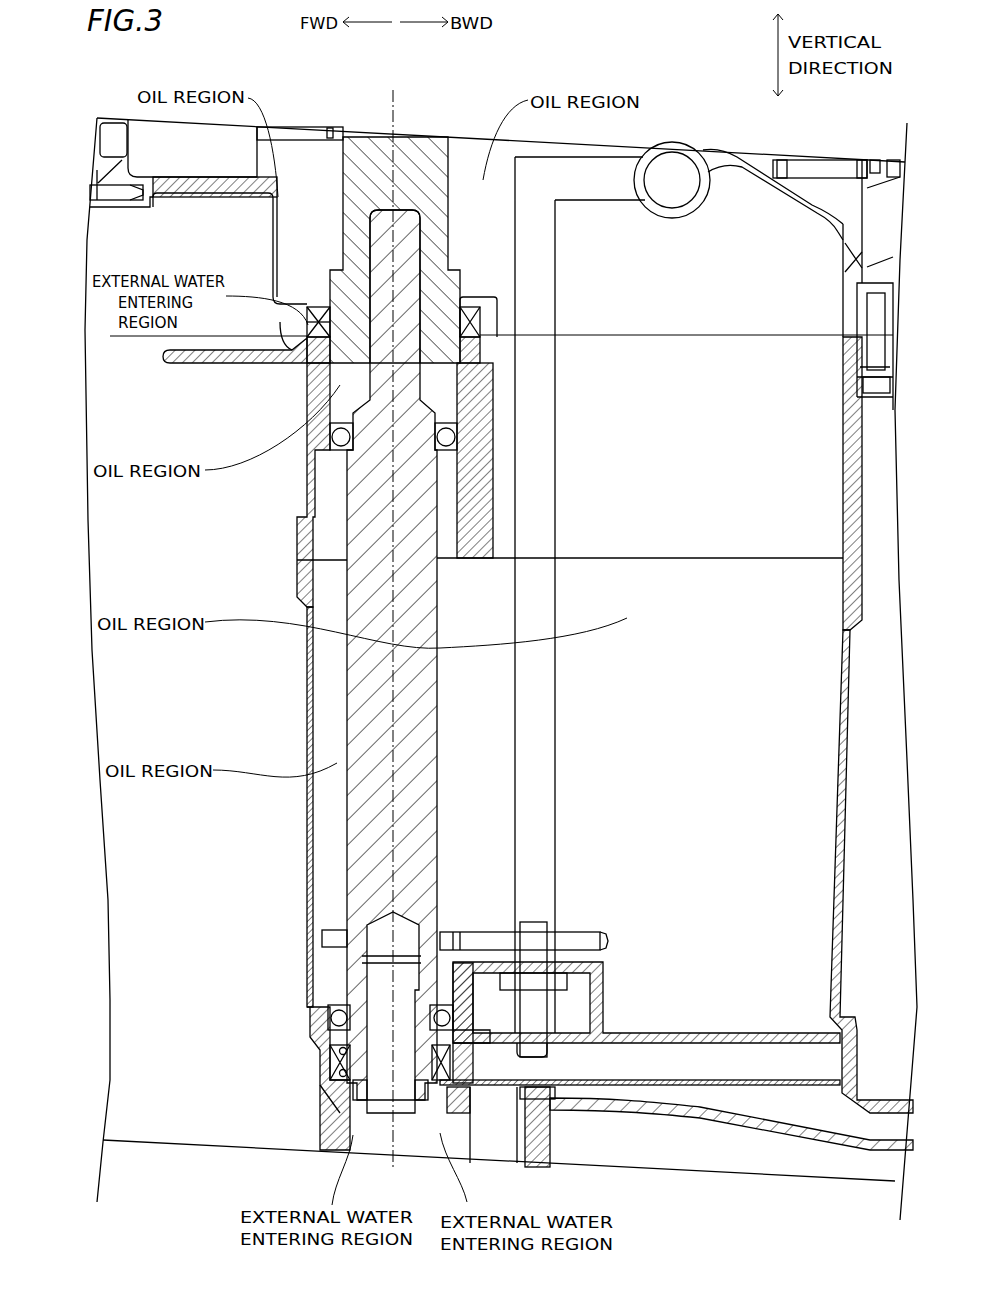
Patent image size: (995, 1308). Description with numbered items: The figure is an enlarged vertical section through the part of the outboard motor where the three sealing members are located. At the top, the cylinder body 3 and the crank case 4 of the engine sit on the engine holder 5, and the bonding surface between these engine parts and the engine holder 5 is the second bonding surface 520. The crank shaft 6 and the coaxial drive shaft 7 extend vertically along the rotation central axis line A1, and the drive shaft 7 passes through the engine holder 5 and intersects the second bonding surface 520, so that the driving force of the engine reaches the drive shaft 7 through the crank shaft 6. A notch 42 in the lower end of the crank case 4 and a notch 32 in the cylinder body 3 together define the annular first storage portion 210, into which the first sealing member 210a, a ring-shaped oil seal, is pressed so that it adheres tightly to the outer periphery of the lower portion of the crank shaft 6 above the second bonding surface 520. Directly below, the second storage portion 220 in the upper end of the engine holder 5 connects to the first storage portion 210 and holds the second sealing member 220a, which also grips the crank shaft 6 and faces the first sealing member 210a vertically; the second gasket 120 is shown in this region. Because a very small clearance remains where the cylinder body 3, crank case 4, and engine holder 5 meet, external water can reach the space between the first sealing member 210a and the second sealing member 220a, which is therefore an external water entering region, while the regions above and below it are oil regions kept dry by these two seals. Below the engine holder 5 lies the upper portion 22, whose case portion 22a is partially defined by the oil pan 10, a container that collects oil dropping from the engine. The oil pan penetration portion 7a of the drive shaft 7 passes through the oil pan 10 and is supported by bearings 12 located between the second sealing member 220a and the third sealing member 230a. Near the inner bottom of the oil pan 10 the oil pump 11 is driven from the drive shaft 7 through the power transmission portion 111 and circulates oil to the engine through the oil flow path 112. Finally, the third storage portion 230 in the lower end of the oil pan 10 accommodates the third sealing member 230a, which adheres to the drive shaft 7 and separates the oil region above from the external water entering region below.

The cylinder body 3 is at (807, 197).
The crank case 4 is at (148, 160).
The engine holder 5 is at (857, 517).
The crank shaft 6 is at (303, 212).
The drive shaft 7 is at (278, 661).
The oil pan penetration portion 7a is at (380, 703).
The oil pan 10 is at (845, 698).
The oil pump 11 is at (603, 1000).
The bearings 12 is at (310, 488).
The upper portion 22 is at (311, 845).
The case portion 22a is at (300, 924).
The notch 32 is at (470, 332).
The notch 42 is at (312, 300).
The power transmission portion 111 is at (463, 932).
The oil flow path 112 is at (538, 697).
The second gasket 120 is at (563, 330).
The first storage portion 210 is at (383, 257).
The first sealing member 210a is at (313, 318).
The second storage portion 220 is at (313, 380).
The second sealing member 220a is at (353, 390).
The third storage portion 230 is at (323, 1060).
The third sealing member 230a is at (320, 1068).
The second bonding surface 520 is at (797, 333).
The rotation central axis line A1 is at (394, 621).